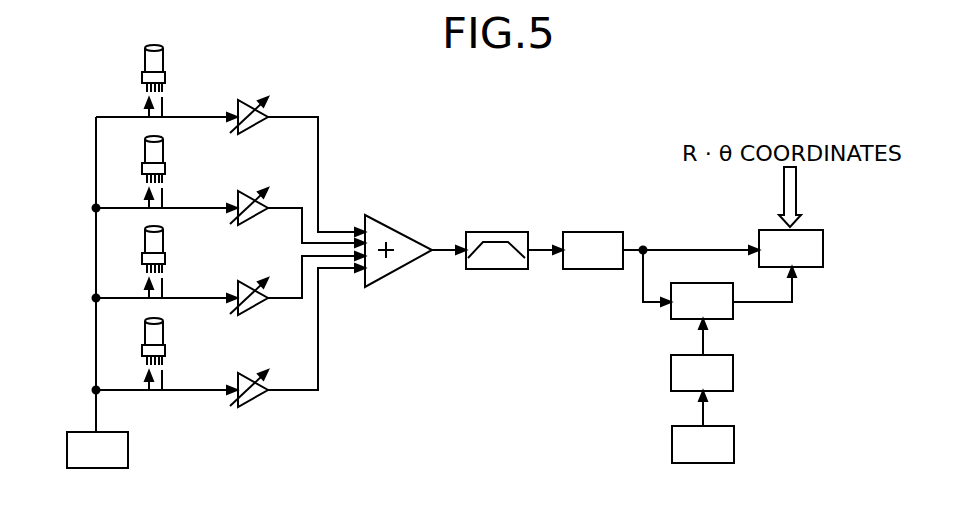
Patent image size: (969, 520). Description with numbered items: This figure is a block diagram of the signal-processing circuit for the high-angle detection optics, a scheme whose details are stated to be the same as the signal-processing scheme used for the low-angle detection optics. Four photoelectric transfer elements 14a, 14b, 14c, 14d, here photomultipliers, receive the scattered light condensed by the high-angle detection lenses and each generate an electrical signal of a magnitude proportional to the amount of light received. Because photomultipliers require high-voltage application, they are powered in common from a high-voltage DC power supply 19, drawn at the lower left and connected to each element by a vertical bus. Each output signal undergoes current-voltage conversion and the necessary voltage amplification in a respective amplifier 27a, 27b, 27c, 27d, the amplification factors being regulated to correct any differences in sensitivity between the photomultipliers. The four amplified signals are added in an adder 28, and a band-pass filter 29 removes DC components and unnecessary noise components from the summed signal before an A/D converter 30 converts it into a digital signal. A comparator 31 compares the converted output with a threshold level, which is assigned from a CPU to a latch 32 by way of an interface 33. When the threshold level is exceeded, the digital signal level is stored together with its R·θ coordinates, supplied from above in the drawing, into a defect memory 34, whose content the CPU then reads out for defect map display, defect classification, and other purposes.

The photoelectric transfer element 14a is at (142, 80).
The photoelectric transfer element 14b is at (142, 171).
The photoelectric transfer element 14c is at (142, 261).
The photoelectric transfer element 14d is at (142, 353).
The high-voltage DC power supply 19 is at (128, 447).
The amplifier 27a is at (235, 105).
The amplifier 27b is at (235, 196).
The amplifier 27c is at (235, 286).
The amplifier 27d is at (235, 378).
The summing amplifier 28 is at (402, 234).
The band-pass filter 29 is at (493, 232).
The analog-to-digital converter 30 is at (592, 232).
The signal processing unit 31 is at (671, 314).
The processing unit 32 is at (671, 375).
The processing unit 33 is at (672, 446).
The output / coordinate conversion unit 34 is at (818, 268).